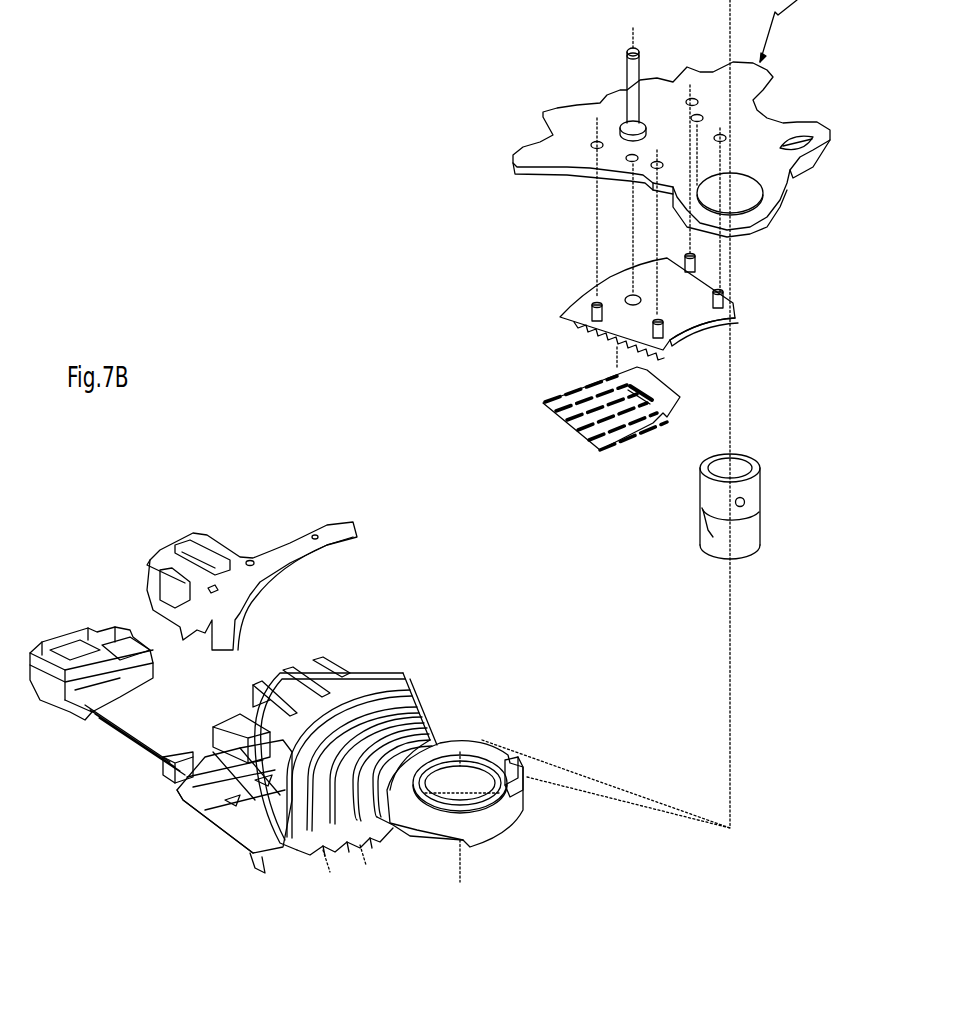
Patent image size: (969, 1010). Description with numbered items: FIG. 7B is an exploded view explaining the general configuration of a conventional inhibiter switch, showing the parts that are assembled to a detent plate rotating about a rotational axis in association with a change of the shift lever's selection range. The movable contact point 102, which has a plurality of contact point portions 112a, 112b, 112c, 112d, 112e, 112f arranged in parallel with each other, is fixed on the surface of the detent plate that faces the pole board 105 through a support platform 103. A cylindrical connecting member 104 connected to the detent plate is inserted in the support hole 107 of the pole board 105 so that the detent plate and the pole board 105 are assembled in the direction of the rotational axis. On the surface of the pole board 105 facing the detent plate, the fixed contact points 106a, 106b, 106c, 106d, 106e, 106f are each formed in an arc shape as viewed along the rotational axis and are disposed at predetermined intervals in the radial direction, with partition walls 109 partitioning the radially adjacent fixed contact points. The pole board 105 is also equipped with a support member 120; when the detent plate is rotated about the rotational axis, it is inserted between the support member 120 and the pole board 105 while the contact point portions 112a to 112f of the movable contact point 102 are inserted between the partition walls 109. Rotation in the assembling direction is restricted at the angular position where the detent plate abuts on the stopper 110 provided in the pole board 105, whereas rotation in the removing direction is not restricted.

The movable contact point 102 is at (568, 407).
The support platform 103 is at (580, 293).
The cylindrical connecting member 104 is at (697, 548).
The pole board 105 is at (185, 822).
The fixed contact point 106a is at (383, 787).
The fixed contact point 106b is at (397, 723).
The fixed contact point 106c is at (367, 717).
The fixed contact point 106d is at (372, 710).
The fixed contact point 106e is at (360, 707).
The fixed contact point 106f is at (327, 717).
The support hole 107 is at (460, 784).
The partition walls 109 is at (338, 845).
The stopper 110 is at (528, 770).
The contact point portion 112a is at (600, 450).
The contact point portion 112b is at (589, 440).
The contact point portion 112c is at (578, 430).
The contact point portion 112d is at (567, 420).
The contact point portion 112e is at (556, 411).
The contact point portion 112f is at (545, 400).
The support member 120 is at (177, 533).